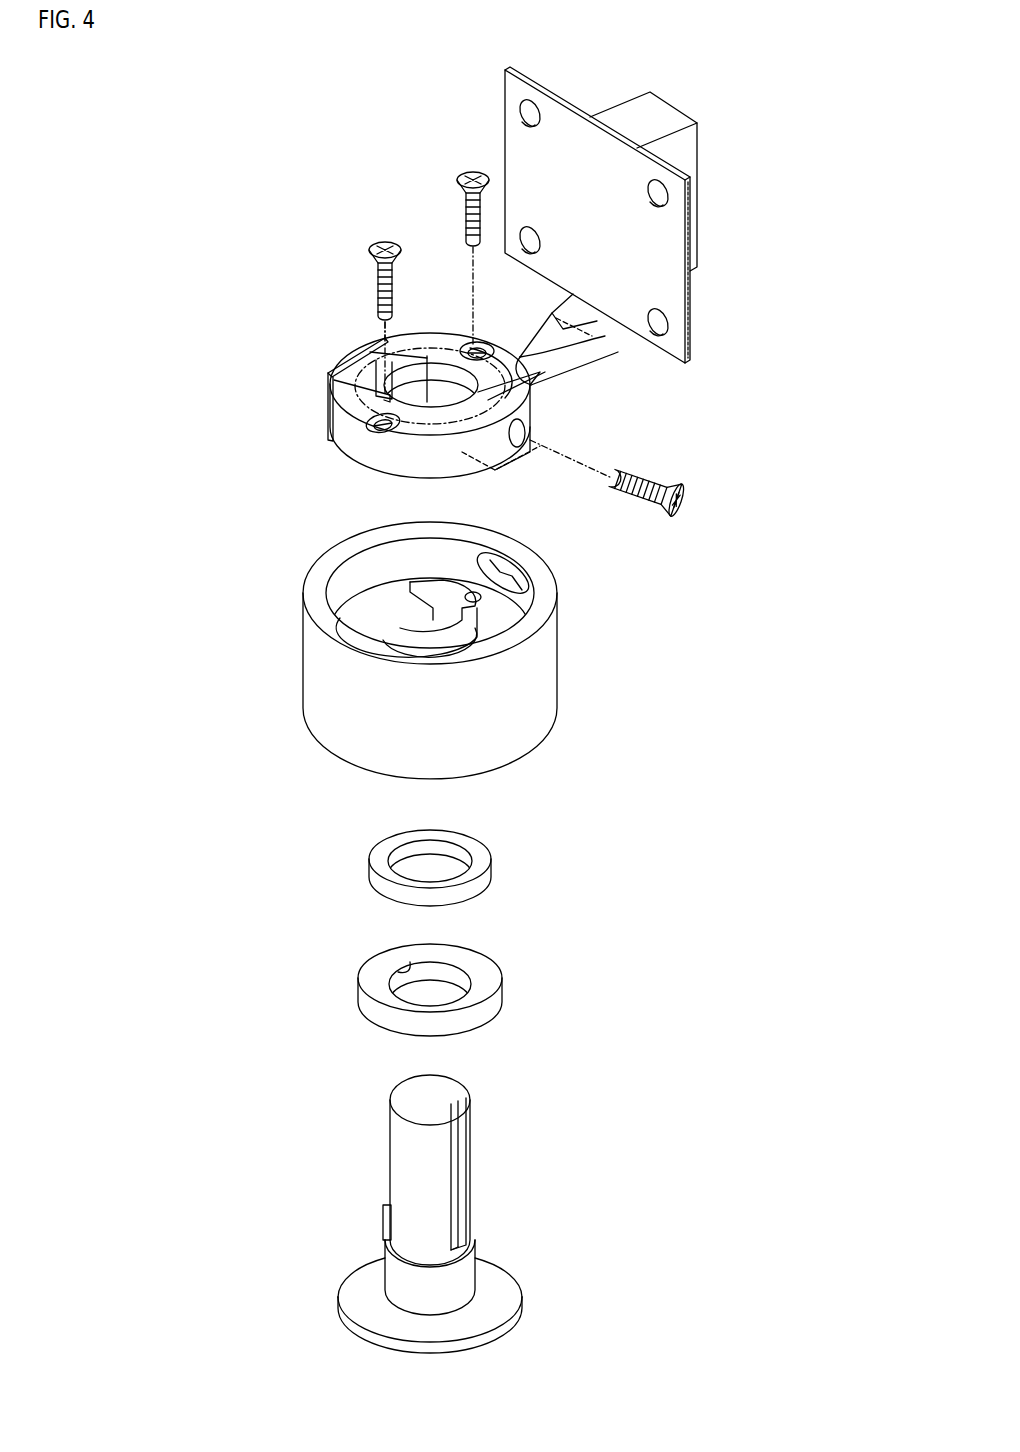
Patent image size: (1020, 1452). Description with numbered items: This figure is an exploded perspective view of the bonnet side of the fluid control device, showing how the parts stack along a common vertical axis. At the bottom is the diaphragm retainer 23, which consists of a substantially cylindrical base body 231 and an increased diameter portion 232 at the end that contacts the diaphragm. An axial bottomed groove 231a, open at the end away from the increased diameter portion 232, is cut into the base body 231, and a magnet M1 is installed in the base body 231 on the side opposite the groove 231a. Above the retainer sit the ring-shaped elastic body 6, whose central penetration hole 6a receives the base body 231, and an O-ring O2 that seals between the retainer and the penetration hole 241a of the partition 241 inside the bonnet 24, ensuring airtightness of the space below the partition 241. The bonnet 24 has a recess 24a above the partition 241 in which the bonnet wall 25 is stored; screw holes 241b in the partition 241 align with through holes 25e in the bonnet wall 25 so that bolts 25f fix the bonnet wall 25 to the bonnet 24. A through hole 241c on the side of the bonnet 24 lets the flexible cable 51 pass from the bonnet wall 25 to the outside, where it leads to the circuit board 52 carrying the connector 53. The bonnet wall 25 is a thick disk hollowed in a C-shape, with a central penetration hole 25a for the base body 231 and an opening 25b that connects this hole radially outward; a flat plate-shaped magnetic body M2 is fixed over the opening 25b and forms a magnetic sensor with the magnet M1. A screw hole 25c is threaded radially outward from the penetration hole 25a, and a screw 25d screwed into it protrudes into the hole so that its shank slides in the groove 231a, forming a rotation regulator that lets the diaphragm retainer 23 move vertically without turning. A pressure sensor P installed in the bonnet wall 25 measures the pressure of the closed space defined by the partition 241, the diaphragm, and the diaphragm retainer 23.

The diaphragm retainer 23 is at (382, 1077).
The base body 231 is at (392, 1142).
The groove 231a is at (460, 1102).
The increased diameter portion 232 is at (522, 1298).
The magnet M1 is at (383, 1224).
The elastic body 6 is at (502, 985).
The penetration hole 6a is at (406, 962).
The O-ring O2 is at (492, 877).
The bonnet 24 is at (570, 695).
The recess 24a is at (424, 558).
The partition 241 is at (510, 618).
The penetration hole 241a is at (392, 630).
The screw hole 241b is at (478, 598).
The through hole 241c is at (556, 600).
The bonnet wall 25 is at (340, 450).
The penetration hole 25a is at (468, 389).
The opening 25b is at (380, 360).
The screw hole 25c is at (530, 443).
The screw 25d is at (697, 502).
The through hole 25e is at (477, 351).
The bolt 25f is at (468, 172).
The magnetic body M2 is at (330, 400).
The pressure sensor P is at (497, 470).
The flexible cable 51 is at (563, 312).
The circuit board 52 is at (688, 321).
The connector 53 is at (703, 232).